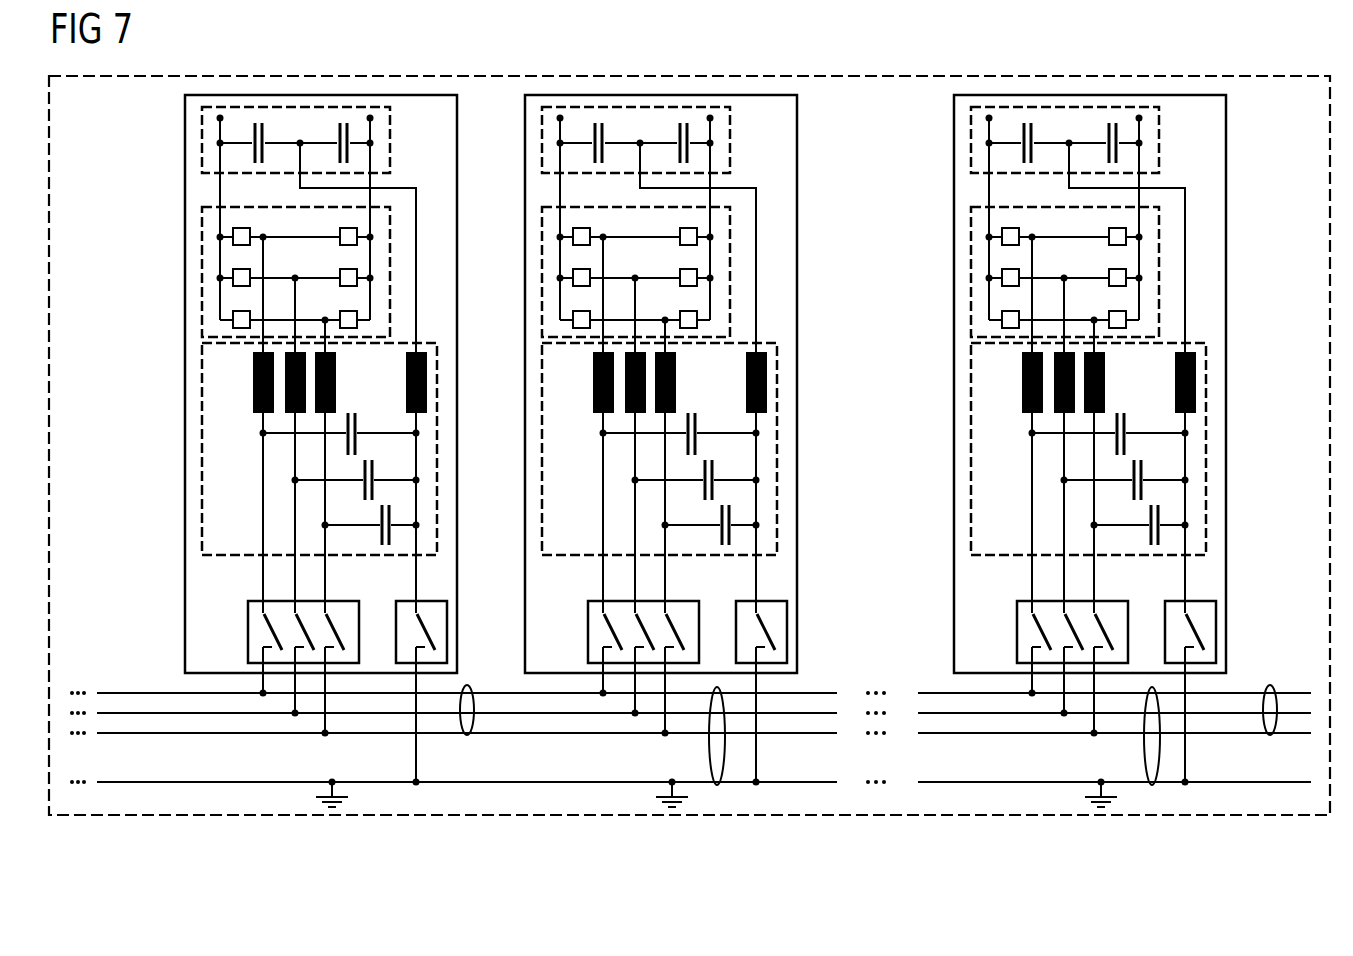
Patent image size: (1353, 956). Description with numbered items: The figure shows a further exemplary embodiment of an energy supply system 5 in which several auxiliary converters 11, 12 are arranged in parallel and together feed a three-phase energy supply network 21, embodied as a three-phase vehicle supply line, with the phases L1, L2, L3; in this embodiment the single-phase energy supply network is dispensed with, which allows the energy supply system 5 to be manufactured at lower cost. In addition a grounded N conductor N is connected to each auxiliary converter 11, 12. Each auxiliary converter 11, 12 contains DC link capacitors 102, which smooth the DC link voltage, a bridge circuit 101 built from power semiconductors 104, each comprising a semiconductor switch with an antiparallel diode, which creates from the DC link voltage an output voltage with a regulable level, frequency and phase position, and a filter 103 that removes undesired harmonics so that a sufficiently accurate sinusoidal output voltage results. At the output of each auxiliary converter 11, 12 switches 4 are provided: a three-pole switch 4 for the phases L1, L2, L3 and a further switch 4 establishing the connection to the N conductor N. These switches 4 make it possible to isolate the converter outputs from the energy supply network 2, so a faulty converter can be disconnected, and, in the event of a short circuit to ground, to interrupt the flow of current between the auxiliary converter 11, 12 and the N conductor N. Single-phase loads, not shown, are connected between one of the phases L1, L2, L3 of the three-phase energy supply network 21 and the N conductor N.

The energy supply system 5 is at (882, 76).
The auxiliary converter 11 is at (318, 94).
The auxiliary converter 12 is at (657, 95).
The DC link capacitor 102 is at (201, 145).
The bridge circuit 101 is at (201, 267).
The power semiconductor 104 is at (242, 232).
The filter 103 is at (201, 492).
The switch 4 is at (256, 623).
The three-phase energy supply network 21 is at (467, 685).
The energy supply network 2 is at (716, 785).
The phase L1 is at (107, 693).
The phase L2 is at (140, 713).
The phase L3 is at (175, 733).
The N conductor N is at (308, 782).